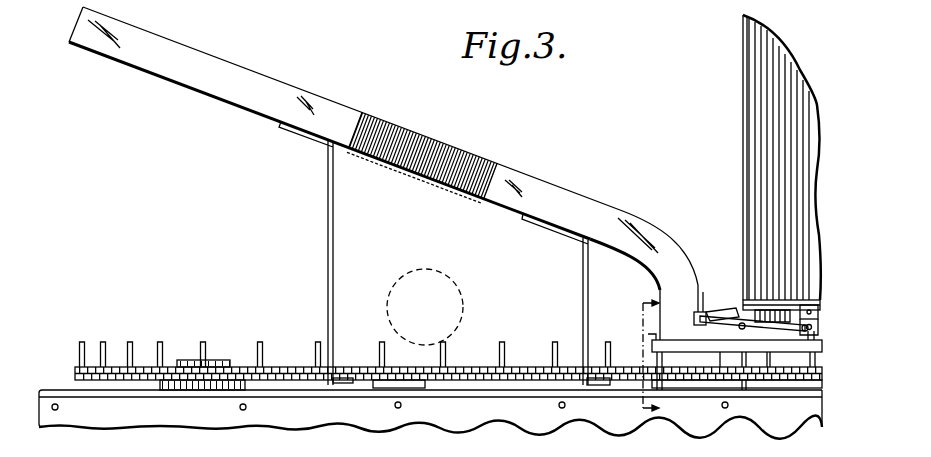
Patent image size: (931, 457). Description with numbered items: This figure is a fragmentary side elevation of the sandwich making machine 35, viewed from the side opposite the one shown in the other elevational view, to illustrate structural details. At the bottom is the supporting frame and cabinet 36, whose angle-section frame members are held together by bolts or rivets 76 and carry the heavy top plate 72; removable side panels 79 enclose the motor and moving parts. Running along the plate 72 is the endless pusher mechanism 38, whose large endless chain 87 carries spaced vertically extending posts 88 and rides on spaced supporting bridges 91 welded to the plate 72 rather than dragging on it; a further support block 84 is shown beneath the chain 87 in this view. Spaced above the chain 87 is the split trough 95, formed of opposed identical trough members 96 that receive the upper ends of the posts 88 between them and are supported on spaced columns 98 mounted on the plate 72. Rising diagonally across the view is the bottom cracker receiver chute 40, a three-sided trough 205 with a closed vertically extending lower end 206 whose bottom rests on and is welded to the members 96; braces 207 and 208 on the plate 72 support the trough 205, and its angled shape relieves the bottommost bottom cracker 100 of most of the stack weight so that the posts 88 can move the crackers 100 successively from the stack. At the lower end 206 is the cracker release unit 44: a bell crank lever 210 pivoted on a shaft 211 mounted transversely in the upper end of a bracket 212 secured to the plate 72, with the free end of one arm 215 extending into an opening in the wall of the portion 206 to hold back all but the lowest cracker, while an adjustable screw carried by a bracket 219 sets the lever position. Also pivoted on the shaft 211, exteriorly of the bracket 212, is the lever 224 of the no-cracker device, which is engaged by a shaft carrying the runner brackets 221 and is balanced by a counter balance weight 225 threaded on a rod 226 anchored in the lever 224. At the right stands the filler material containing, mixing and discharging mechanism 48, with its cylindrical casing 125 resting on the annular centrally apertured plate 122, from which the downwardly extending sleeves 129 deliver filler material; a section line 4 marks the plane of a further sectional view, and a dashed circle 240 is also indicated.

The section line 4 is at (639, 359).
The sandwich making machine 35 is at (122, 183).
The supporting frame and cabinet 36 is at (97, 435).
The endless pusher mechanism 38 is at (230, 354).
The bottom cracker receiver chute 40 is at (540, 173).
The cracker release unit 44 is at (730, 335).
The filler material containing, mixing and discharging mechanism 48 is at (737, 222).
The top plate 72 is at (52, 389).
The bolts or rivets 76 is at (60, 409).
The side panels 79 is at (317, 420).
The support block 84 is at (200, 385).
The endless chain 87 is at (78, 366).
The posts 88 is at (160, 342).
The supporting bridges 91 is at (405, 385).
The split trough 95 is at (651, 333).
The trough members 96 is at (668, 340).
The columns 98 is at (660, 395).
The bottom cracker 100 is at (455, 157).
The centrally apertured plate 122 is at (795, 305).
The cylindrical casing 125 is at (767, 158).
The sleeves 129 is at (775, 310).
The three-sided trough 205 is at (270, 78).
The vertically extending lower end 206 is at (658, 281).
The brace 207 is at (328, 240).
The brace 208 is at (583, 268).
The bell crank lever 210 is at (723, 317).
The shaft 211 is at (727, 313).
The bracket 212 is at (742, 360).
The arm 215 is at (696, 319).
The bracket 219 is at (765, 383).
The bracket 221 is at (805, 335).
The lever 224 is at (790, 327).
The counter balance weight 225 is at (697, 310).
The rod 226 is at (702, 312).
The roller 240 is at (447, 278).